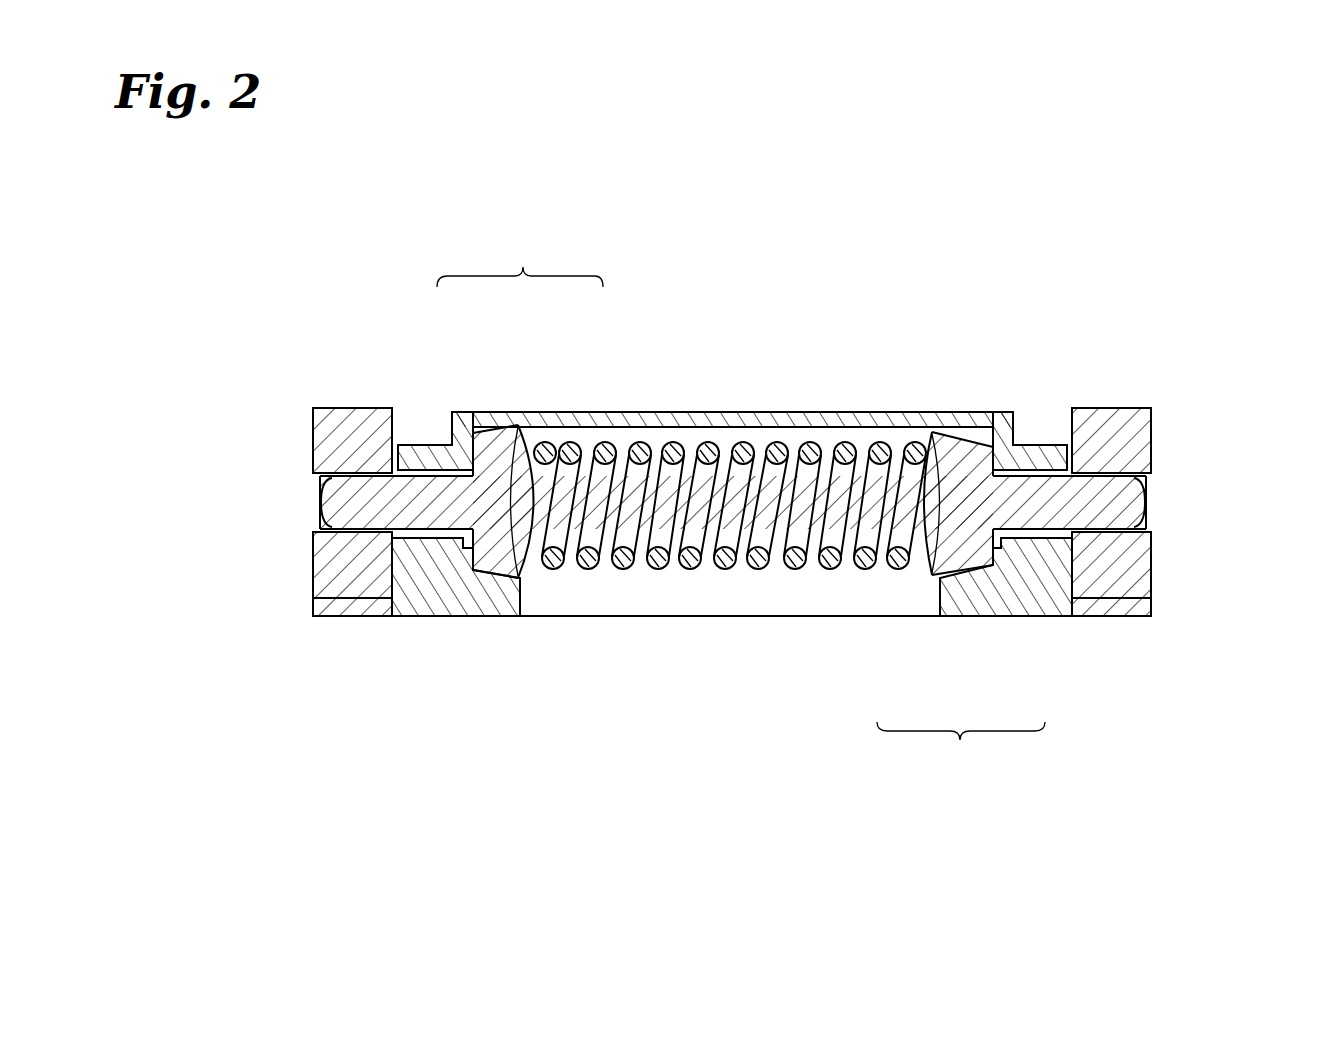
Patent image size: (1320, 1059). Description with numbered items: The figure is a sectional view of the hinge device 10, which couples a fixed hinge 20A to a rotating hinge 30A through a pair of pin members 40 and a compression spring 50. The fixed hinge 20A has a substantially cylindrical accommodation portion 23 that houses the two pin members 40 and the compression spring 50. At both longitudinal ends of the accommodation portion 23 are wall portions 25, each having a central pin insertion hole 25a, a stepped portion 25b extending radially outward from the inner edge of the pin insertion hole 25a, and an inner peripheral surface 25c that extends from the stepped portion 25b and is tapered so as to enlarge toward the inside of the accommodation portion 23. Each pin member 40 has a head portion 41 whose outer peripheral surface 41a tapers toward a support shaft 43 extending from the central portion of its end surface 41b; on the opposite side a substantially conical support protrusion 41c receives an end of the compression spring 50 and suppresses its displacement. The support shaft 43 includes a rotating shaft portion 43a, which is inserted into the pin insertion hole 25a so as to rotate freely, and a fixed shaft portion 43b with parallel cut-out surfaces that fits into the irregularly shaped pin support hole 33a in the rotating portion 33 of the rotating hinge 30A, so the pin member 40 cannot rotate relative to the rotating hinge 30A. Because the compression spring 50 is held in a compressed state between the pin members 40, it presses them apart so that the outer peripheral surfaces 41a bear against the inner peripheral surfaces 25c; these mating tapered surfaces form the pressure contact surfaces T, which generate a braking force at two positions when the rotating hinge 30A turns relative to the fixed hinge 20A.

The hinge device 10 is at (765, 378).
The fixed hinge 20A is at (832, 412).
The accommodation portion 23 is at (700, 412).
The wall portion 25 is at (443, 614).
The pin insertion hole 25a is at (418, 445).
The stepped portion 25b is at (452, 598).
The inner peripheral surface 25c is at (463, 412).
The rotating hinge 30A is at (1088, 398).
The rotating portion 33 is at (340, 408).
The pin support hole 33a is at (313, 478).
The pin member 40 is at (537, 582).
The head portion 41 is at (523, 572).
The outer peripheral surface 41a is at (490, 430).
The end surface 41b is at (989, 450).
The support protrusion 41c is at (542, 428).
The support shaft 43 is at (311, 502).
The rotating shaft portion 43a is at (1030, 478).
The fixed shaft portion 43b is at (337, 508).
The compression spring 50 is at (695, 575).
The pressure contact surface T is at (741, 503).